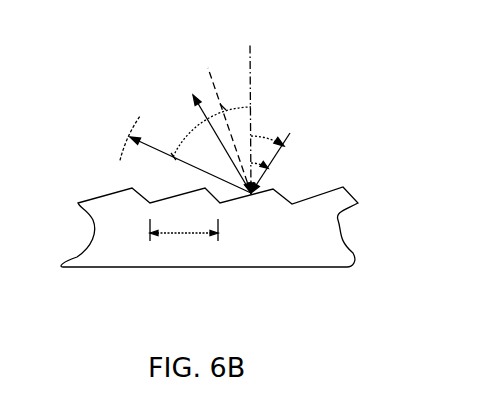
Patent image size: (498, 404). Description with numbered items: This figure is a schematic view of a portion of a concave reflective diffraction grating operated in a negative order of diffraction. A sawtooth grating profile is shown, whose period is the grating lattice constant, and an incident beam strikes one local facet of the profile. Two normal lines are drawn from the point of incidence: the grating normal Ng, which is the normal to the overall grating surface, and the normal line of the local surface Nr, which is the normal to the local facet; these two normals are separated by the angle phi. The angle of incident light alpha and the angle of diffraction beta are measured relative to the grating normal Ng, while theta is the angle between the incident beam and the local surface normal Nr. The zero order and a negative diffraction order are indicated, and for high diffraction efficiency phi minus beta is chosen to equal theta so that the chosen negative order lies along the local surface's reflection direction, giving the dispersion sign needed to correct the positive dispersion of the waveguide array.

The grating normal Ng is at (252, 117).
The normal line of the local surface Nr is at (220, 120).